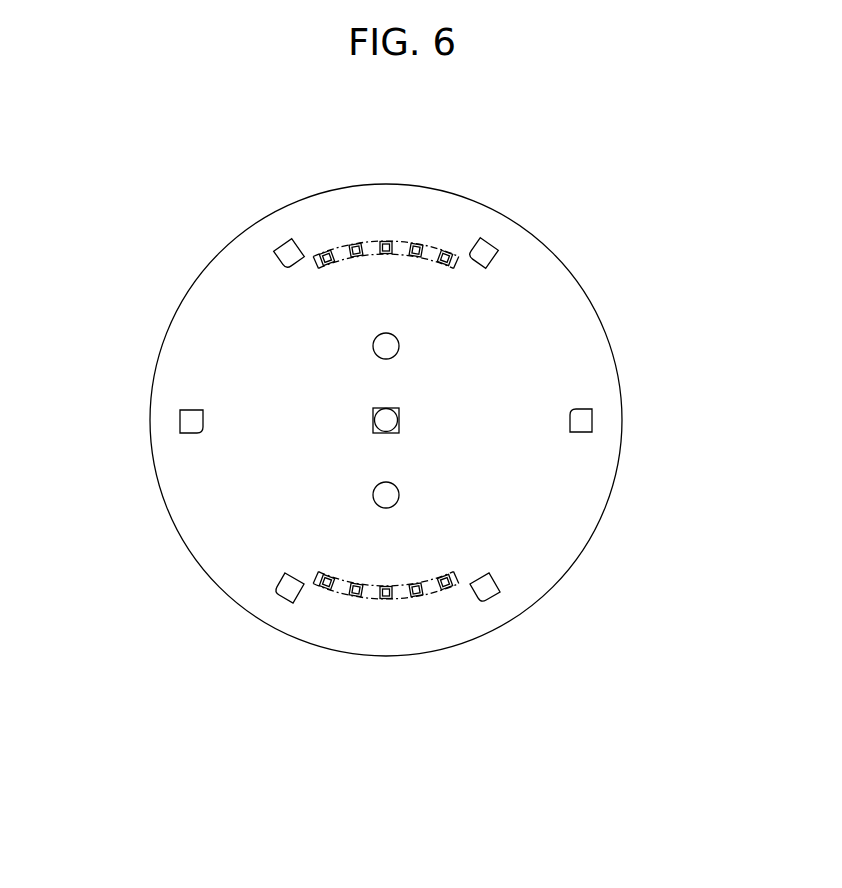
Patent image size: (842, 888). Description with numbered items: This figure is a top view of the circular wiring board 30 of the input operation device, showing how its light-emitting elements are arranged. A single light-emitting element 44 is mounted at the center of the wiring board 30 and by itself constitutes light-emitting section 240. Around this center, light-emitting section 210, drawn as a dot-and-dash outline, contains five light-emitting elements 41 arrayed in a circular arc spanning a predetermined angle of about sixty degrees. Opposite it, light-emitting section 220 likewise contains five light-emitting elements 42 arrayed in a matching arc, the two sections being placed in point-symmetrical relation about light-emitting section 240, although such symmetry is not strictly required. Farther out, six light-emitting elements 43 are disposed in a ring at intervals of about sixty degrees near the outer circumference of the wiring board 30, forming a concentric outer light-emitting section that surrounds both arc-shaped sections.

The wiring board 30 is at (537, 532).
The light-emitting elements 41 is at (385, 243).
The light-emitting elements 42 is at (386, 598).
The light-emitting elements 43 is at (283, 252).
The light-emitting element 44 is at (222, 495).
The light-emitting section 240 is at (383, 424).
The light-emitting section 210 is at (437, 246).
The light-emitting section 220 is at (334, 598).